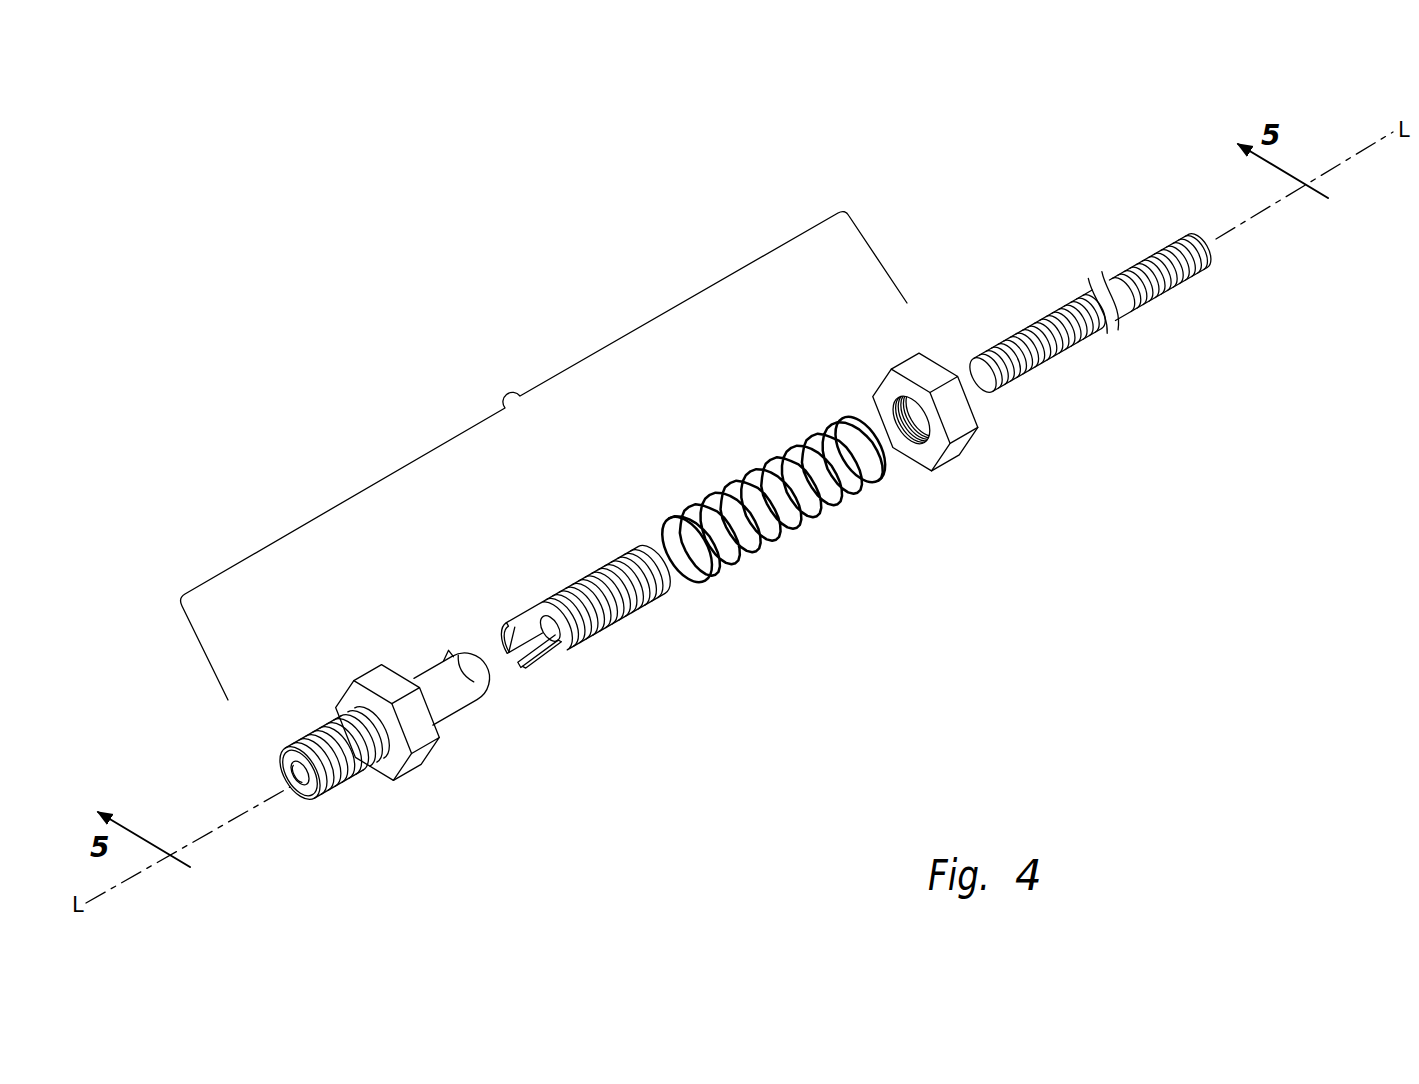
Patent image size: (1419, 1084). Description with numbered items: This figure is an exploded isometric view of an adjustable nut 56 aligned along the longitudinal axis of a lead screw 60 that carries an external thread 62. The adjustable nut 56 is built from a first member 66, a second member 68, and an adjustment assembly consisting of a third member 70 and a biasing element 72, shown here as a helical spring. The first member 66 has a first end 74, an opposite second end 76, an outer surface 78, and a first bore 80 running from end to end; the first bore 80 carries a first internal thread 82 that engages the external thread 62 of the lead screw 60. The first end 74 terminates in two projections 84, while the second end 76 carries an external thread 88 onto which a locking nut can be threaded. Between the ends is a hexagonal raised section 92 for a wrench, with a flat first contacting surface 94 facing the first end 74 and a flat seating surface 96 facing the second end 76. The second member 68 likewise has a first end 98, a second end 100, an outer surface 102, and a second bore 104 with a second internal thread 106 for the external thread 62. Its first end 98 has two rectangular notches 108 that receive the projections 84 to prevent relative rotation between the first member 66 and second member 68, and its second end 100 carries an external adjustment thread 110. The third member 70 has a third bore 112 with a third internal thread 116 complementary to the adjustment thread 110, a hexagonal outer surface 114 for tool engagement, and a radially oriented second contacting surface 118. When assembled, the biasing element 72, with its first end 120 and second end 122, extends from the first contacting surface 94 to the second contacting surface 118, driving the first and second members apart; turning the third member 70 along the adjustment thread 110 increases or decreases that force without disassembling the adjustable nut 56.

The adjustable nut 56 is at (505, 392).
The lead screw 60 is at (1089, 320).
The external thread 62 is at (1066, 305).
The first member 66 is at (371, 724).
The second member 68 is at (560, 611).
The third member 70 is at (895, 429).
The biasing element 72 is at (775, 518).
The first end 74 is at (451, 681).
The second end 76 is at (387, 722).
The outer surface 78 is at (447, 656).
The first bore 80 is at (299, 773).
The first internal thread 82 is at (300, 773).
The projection 84 is at (464, 669).
The external thread 88 is at (342, 749).
The raised section 92 is at (400, 707).
The first contacting surface 94 is at (374, 730).
The seating surface 96 is at (416, 758).
The first end 98 is at (518, 632).
The second end 100 is at (592, 604).
The outer surface 102 is at (539, 652).
The second bore 104 is at (542, 654).
The second internal thread 106 is at (550, 628).
The notch 108 is at (508, 638).
The external adjustment thread 110 is at (608, 594).
The third bore 112 is at (937, 396).
The outer surface 114 is at (912, 420).
The third internal thread 116 is at (954, 448).
The second contacting surface 118 is at (884, 371).
The first end 120 is at (687, 549).
The second end 122 is at (860, 449).